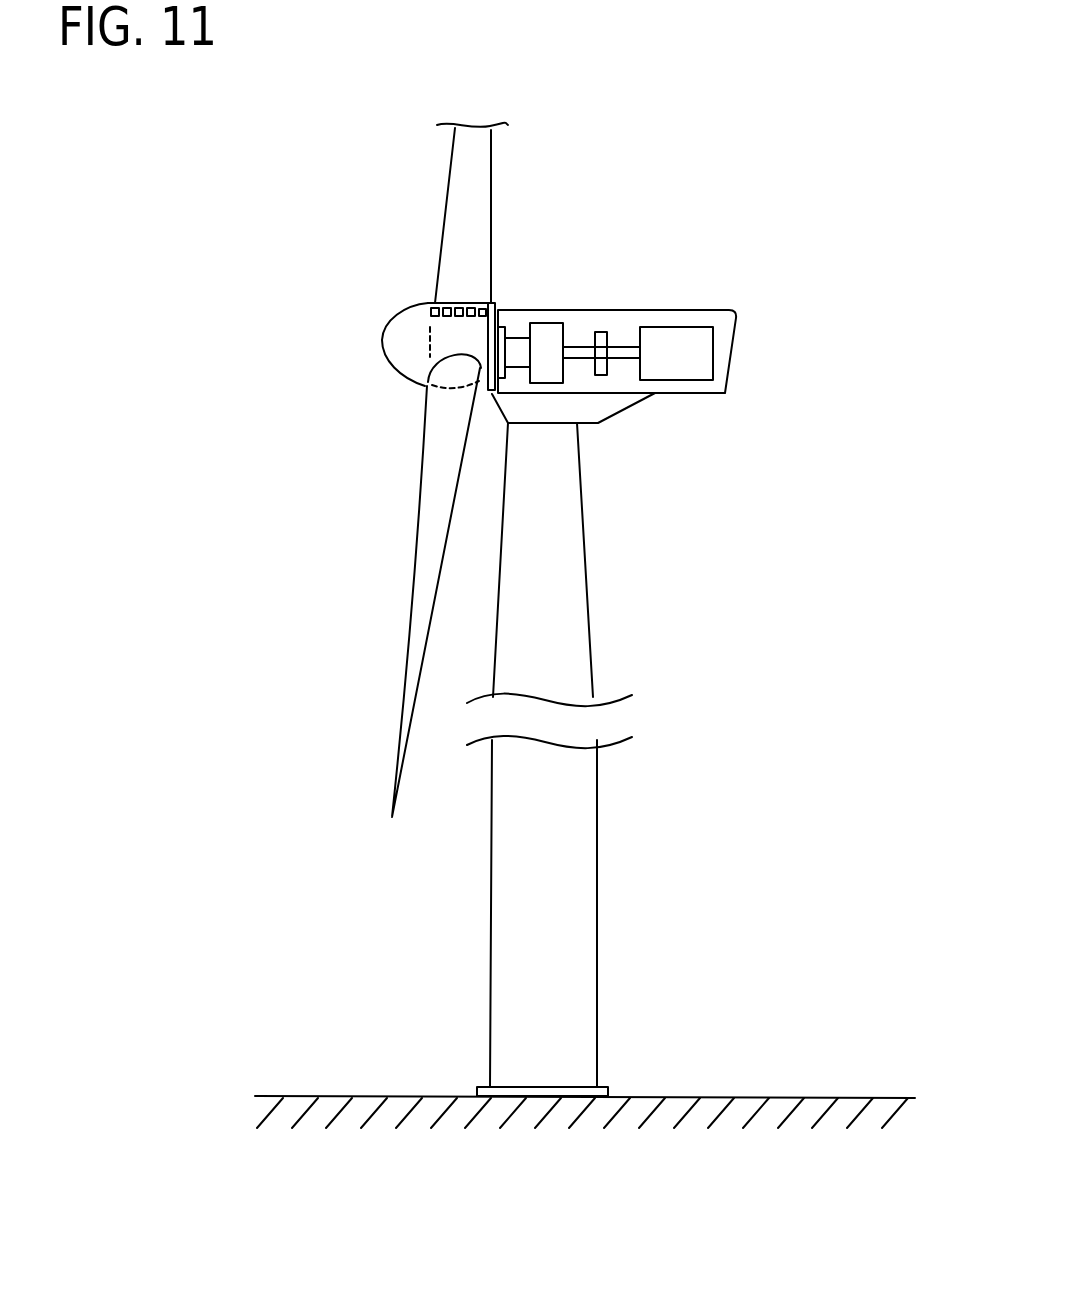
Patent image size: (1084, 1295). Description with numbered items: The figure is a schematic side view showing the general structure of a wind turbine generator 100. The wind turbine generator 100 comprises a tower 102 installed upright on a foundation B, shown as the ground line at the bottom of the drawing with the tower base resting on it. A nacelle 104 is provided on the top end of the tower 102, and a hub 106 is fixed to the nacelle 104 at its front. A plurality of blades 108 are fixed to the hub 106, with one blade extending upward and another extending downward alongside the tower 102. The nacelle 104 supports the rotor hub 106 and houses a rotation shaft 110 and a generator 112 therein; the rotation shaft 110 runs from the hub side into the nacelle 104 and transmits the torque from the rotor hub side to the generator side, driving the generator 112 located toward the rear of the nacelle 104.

The wind turbine generator 100 is at (752, 208).
The tower 102 is at (597, 848).
The nacelle 104 is at (752, 352).
The hub 106 is at (353, 333).
The blades 108 is at (443, 197).
The rotation shaft 110 is at (584, 326).
The generator 112 is at (671, 345).
The foundation B is at (477, 1088).